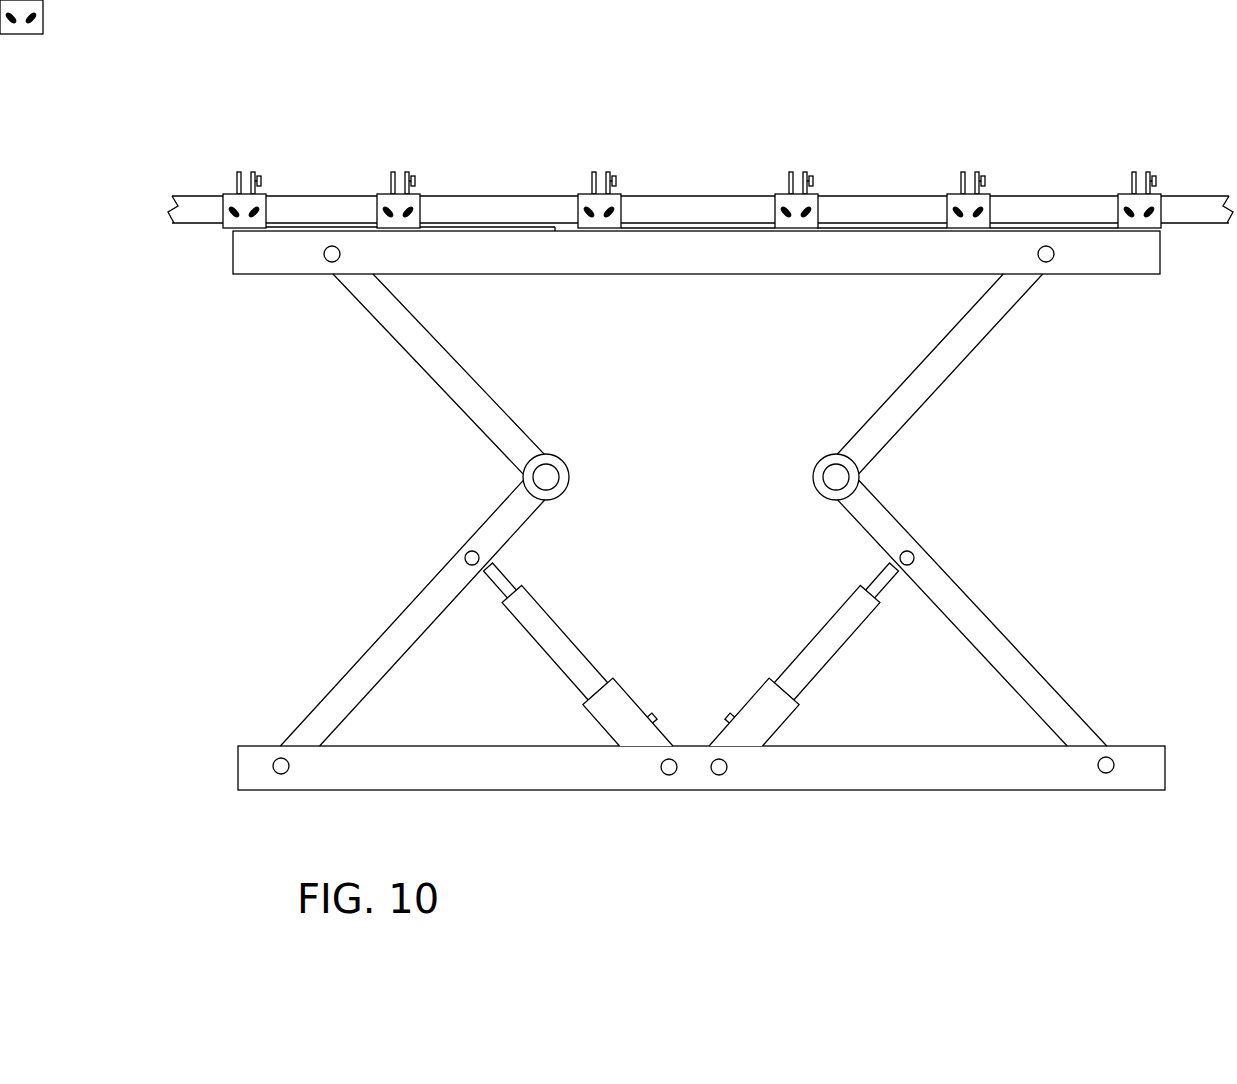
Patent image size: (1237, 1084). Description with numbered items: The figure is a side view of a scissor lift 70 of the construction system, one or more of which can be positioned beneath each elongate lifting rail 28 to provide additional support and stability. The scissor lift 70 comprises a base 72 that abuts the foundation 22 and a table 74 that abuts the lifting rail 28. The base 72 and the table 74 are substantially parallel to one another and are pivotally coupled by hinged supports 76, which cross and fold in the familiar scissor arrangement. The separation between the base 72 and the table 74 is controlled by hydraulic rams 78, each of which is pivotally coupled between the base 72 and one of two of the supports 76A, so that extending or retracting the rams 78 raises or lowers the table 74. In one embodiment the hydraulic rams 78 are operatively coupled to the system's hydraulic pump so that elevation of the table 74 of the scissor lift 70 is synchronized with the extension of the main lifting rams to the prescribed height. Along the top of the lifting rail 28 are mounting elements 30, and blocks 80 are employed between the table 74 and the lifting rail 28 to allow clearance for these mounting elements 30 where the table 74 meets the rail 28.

The foundation 22 is at (618, 437).
The elongate lifting rail 28 is at (200, 224).
The mounting elements 30 is at (588, 176).
The scissor lift 70 is at (684, 510).
The base 72 is at (927, 790).
The table 74 is at (1162, 252).
The hinged supports 76 is at (467, 387).
The supports 76A is at (377, 648).
The hydraulic rams 78 is at (827, 653).
The blocks 80 is at (1078, 229).